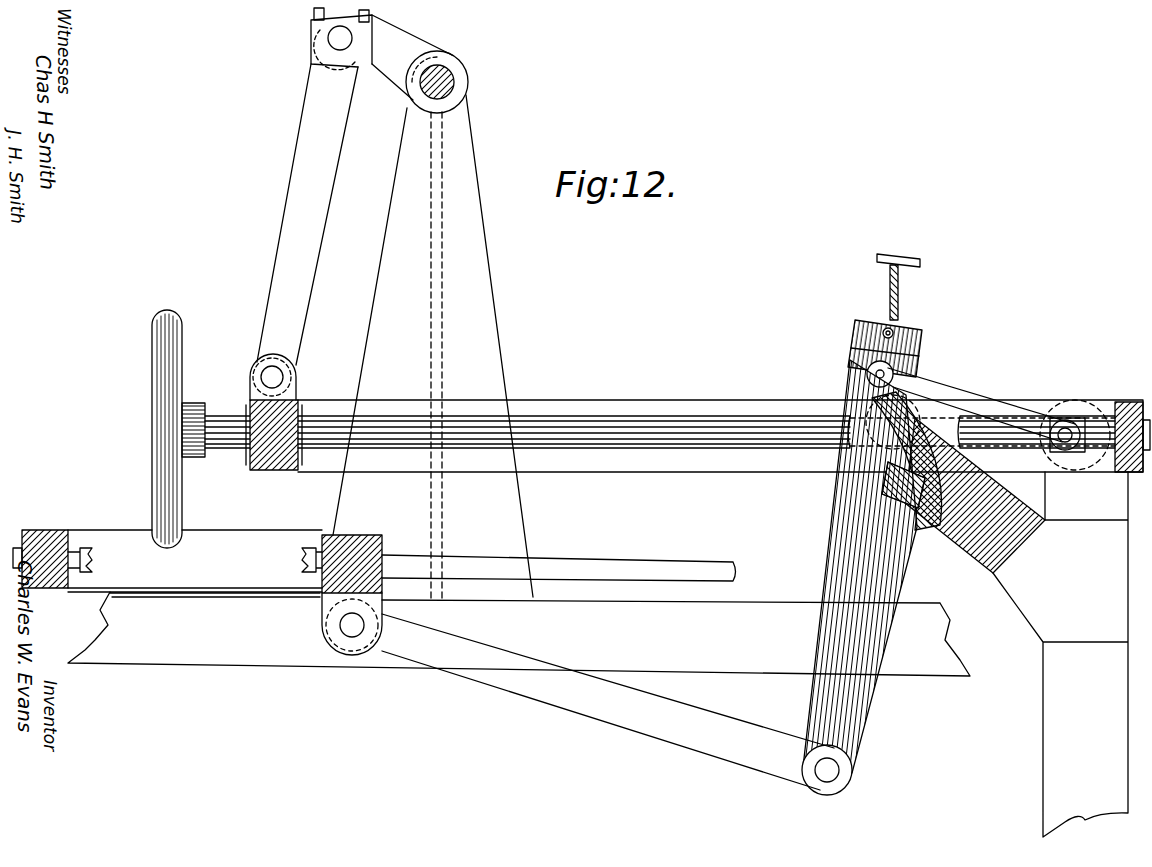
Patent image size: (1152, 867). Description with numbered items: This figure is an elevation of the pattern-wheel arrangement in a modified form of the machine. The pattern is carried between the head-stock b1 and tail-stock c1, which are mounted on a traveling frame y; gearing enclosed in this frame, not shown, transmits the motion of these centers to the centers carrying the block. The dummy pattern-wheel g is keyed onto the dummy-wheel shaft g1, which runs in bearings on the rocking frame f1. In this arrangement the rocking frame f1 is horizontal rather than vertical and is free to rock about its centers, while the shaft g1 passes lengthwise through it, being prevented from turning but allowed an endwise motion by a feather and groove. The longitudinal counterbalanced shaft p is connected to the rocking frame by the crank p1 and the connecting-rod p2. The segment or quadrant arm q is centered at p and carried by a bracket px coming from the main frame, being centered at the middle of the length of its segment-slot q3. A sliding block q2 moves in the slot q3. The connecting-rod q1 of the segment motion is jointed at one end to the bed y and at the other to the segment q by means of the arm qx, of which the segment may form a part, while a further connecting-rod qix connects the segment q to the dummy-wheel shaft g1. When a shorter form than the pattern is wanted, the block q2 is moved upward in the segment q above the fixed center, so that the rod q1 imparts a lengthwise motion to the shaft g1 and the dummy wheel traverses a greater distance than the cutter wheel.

The longitudinal counterbalanced shaft p is at (455, 88).
The crank p1 is at (664, 222).
The connecting-rod p2 is at (311, 204).
The bracket px is at (975, 495).
The segment or quadrant arm q is at (901, 366).
The connecting-rod q1 is at (608, 702).
The sliding block q2 is at (852, 350).
The segment-slot q3 is at (892, 478).
The arm qx is at (859, 577).
The connecting-rod qix is at (999, 419).
The rocking frame f1 is at (565, 416).
The dummy pattern-wheel g is at (170, 348).
The dummy-wheel shaft g1 is at (230, 434).
The head-stock b1 is at (45, 535).
The tail-stock c1 is at (360, 545).
The traveling frame y is at (110, 542).